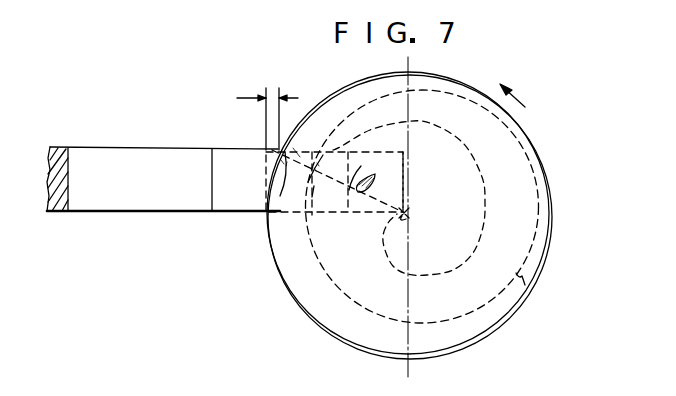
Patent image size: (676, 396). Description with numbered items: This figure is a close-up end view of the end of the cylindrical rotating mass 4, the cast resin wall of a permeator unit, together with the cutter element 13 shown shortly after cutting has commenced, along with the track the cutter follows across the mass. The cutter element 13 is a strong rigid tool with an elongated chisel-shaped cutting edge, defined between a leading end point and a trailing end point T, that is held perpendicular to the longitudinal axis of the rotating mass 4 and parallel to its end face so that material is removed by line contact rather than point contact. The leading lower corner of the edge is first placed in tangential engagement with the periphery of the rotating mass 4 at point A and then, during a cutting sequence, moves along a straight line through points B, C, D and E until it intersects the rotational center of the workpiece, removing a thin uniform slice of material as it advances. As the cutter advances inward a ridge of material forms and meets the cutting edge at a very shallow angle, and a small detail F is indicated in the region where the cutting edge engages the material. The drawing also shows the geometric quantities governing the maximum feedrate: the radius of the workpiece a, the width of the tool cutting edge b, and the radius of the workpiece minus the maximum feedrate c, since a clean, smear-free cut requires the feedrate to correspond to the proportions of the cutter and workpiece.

The cutter element 13 is at (131, 190).
The rotating mass 4 is at (535, 148).
The trailing end point T is at (533, 293).
The start point of cutting stroke A is at (266, 148).
The point along cutting stroke B is at (279, 148).
The point along cutting stroke C is at (313, 175).
The point along cutting stroke D is at (350, 173).
The point along cutting stroke E is at (400, 173).
The chip F is at (372, 178).
The radius of the workpiece a is at (324, 176).
The width of the tool cutting edge b is at (290, 173).
The radius of the workpiece minus the maximum feedrate c is at (343, 195).